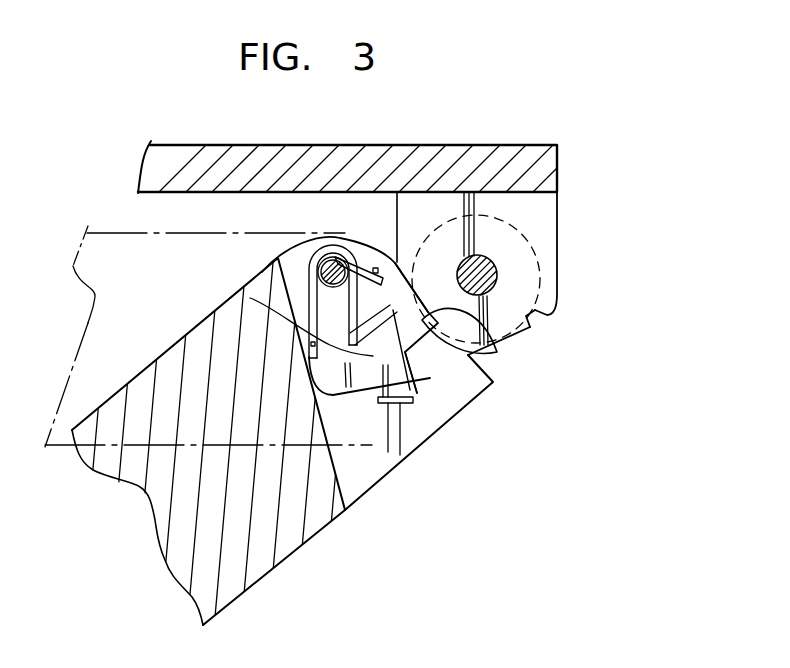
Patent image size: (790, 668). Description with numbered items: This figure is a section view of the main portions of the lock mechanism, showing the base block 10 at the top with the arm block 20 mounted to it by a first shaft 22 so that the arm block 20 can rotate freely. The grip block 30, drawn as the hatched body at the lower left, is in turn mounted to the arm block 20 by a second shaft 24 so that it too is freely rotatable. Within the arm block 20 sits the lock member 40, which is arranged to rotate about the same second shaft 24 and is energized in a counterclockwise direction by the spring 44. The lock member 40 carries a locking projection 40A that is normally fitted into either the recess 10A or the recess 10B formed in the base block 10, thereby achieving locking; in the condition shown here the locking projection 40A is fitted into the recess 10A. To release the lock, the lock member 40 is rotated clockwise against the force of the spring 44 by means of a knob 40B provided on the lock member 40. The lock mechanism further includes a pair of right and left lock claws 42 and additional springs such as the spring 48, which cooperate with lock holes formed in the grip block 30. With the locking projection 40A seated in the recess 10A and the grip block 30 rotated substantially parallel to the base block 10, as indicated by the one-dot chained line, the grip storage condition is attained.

The base block 10 is at (511, 138).
The recess 10A is at (500, 350).
The recess 10B is at (535, 318).
The arm block 20 is at (458, 388).
The first shaft 22 is at (498, 268).
The second shaft 24 is at (338, 257).
The grip block 30 is at (138, 366).
The lock member 40 is at (395, 456).
The locking projection 40A is at (438, 365).
The knob 40B is at (397, 400).
The lock claw 42 is at (332, 340).
The spring 44 is at (308, 292).
The spring 48 is at (382, 393).